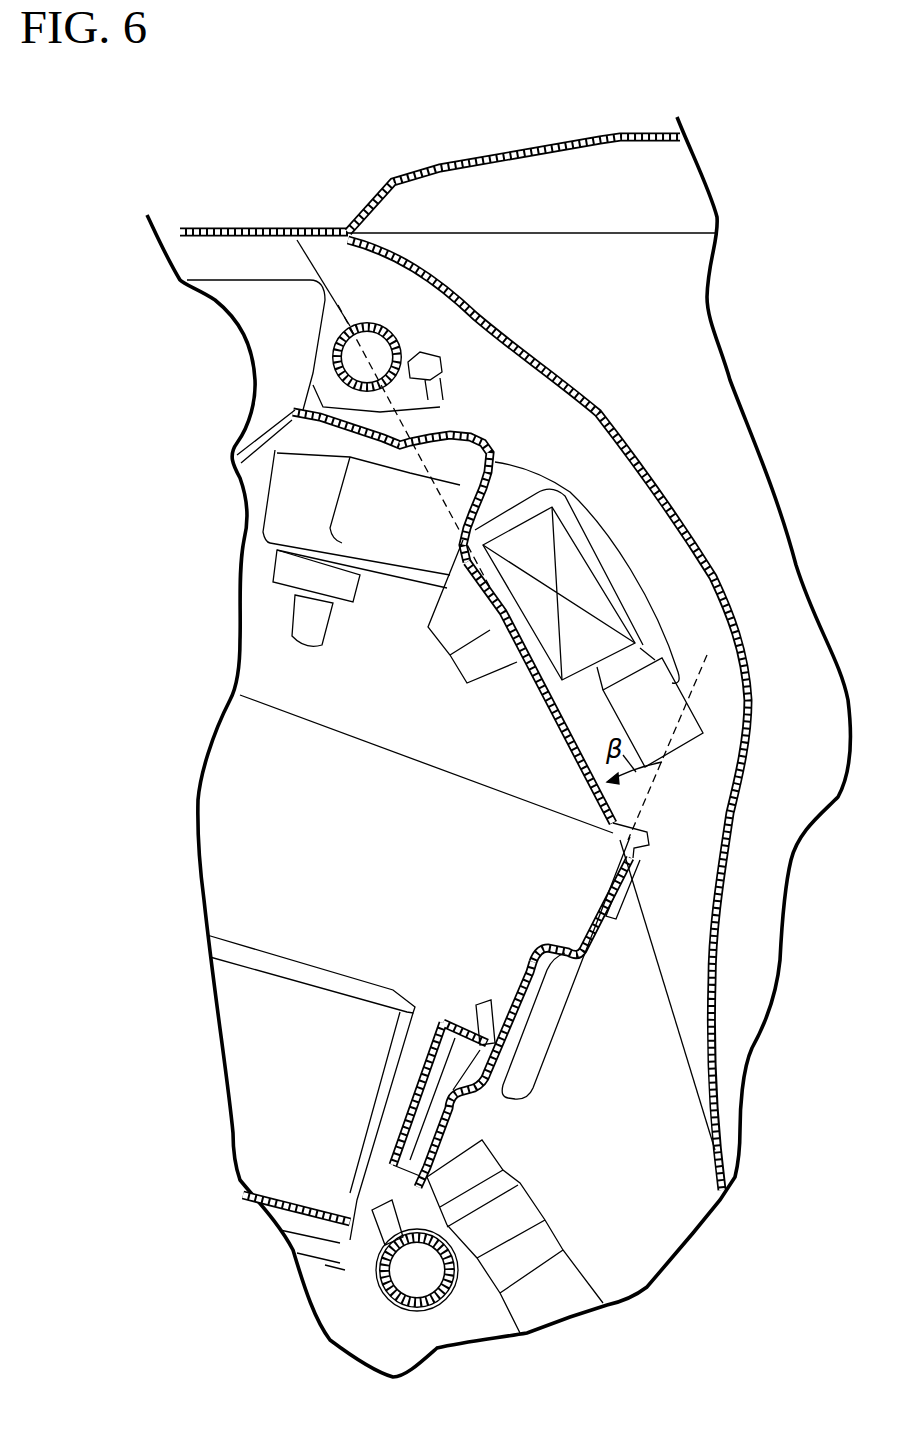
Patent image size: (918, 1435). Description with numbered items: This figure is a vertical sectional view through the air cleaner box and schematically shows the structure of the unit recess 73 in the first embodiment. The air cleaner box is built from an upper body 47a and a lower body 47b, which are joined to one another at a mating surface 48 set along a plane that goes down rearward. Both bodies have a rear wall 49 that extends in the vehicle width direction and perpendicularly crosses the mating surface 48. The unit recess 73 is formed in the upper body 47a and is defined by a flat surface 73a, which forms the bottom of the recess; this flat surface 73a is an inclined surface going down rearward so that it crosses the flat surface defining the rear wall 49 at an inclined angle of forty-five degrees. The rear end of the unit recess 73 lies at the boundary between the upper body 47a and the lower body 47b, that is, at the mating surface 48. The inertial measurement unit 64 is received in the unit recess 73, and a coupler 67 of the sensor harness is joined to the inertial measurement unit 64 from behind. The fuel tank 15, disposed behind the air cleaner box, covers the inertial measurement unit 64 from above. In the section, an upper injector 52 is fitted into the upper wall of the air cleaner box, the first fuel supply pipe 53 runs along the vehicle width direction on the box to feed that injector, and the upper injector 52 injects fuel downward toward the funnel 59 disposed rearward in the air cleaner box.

The fuel tank 15 is at (473, 160).
The first fuel supply pipe 53 is at (375, 325).
The upper body 47a is at (493, 445).
The unit recess 73 is at (490, 502).
The upper injector 52 is at (365, 568).
The inertial measurement unit 64 is at (593, 567).
The coupler 67 is at (670, 700).
The flat surface 73a is at (547, 683).
The mating surface 48 is at (380, 745).
The rear wall 49 is at (595, 933).
The lower body 47b is at (530, 985).
The funnel 59 is at (350, 973).